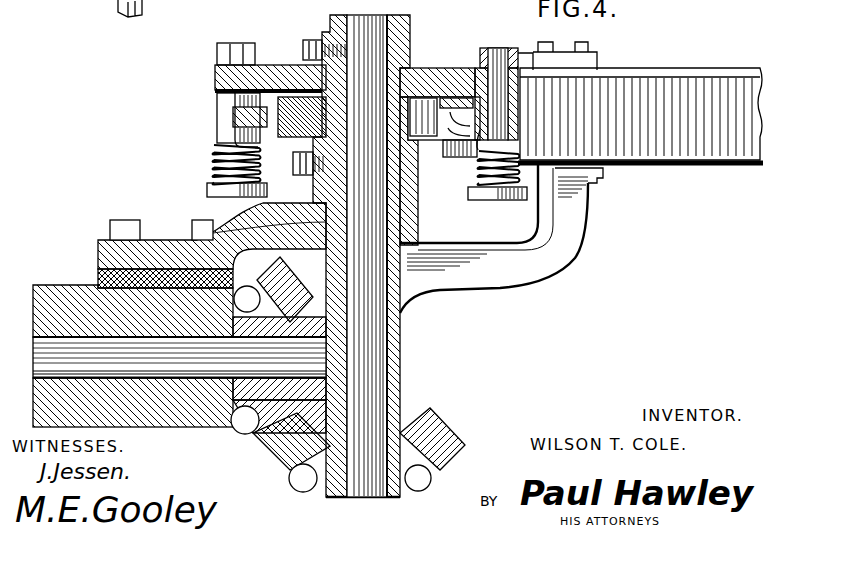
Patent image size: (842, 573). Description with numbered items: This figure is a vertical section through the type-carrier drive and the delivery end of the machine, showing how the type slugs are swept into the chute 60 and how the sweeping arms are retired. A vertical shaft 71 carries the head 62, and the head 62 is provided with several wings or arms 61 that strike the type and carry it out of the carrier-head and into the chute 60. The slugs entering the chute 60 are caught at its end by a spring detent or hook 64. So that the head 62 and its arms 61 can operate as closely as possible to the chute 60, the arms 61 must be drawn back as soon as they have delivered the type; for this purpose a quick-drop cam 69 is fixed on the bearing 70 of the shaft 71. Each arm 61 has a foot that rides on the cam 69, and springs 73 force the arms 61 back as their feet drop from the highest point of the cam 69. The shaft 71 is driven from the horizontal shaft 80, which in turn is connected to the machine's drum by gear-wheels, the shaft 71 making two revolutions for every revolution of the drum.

The chute 60 is at (684, 177).
The wings or arms 61 is at (240, 116).
The head 62 is at (215, 78).
The spring detent or hook 64 is at (480, 60).
The quick-drop cam 69 is at (291, 130).
The bearing 70 is at (400, 208).
The shaft 71 is at (370, 318).
The springs 73 is at (213, 162).
The shaft 80 is at (60, 352).